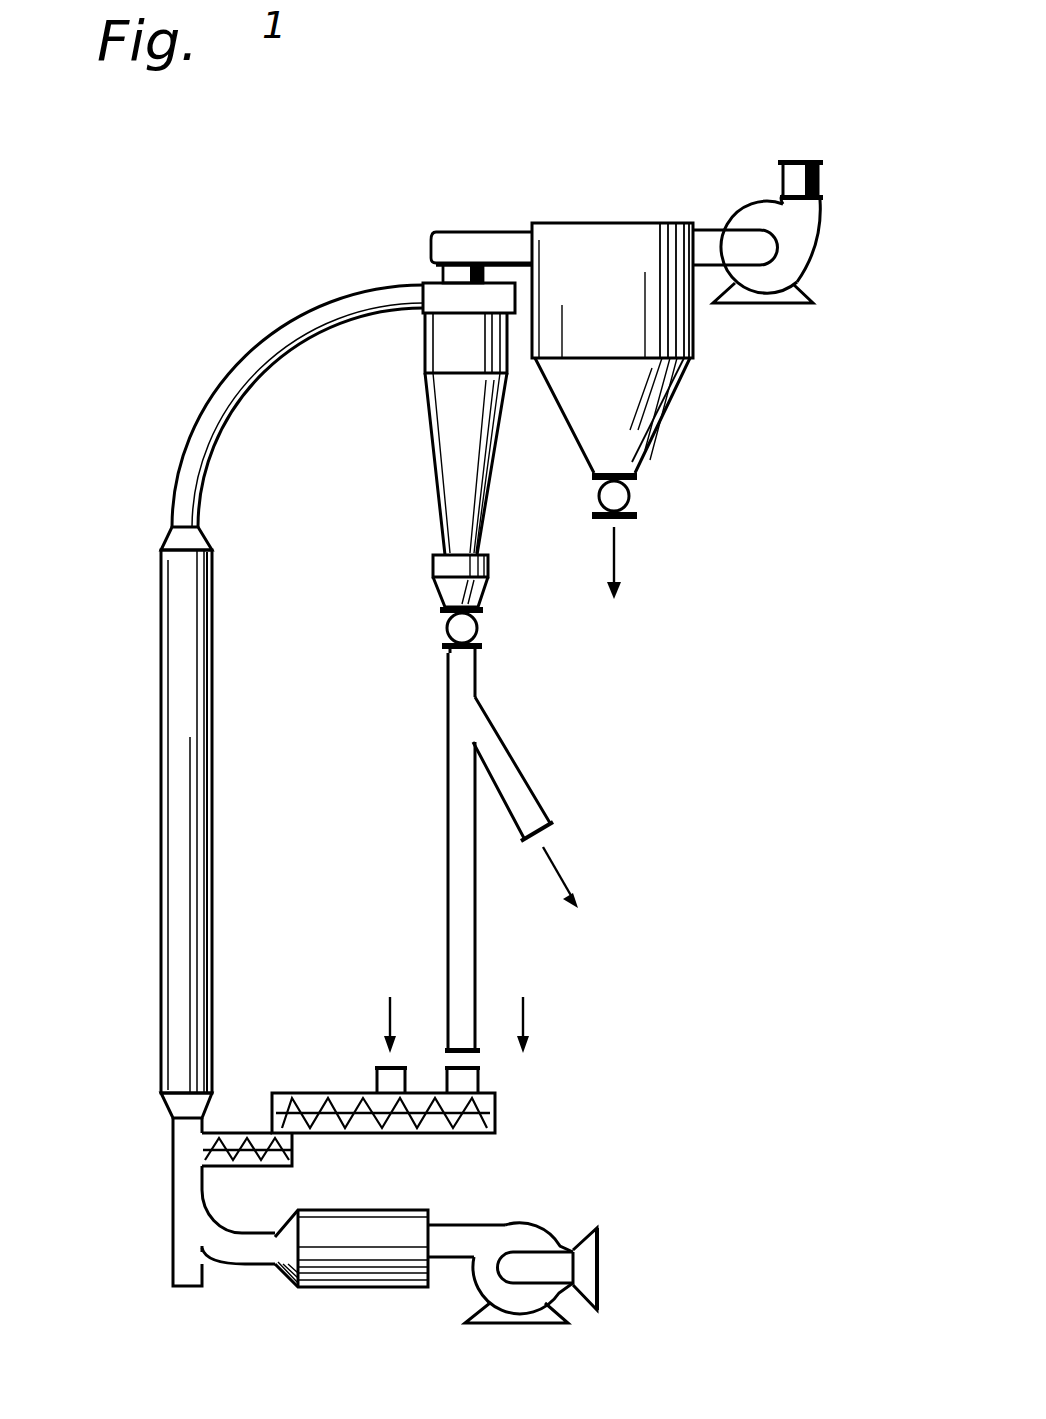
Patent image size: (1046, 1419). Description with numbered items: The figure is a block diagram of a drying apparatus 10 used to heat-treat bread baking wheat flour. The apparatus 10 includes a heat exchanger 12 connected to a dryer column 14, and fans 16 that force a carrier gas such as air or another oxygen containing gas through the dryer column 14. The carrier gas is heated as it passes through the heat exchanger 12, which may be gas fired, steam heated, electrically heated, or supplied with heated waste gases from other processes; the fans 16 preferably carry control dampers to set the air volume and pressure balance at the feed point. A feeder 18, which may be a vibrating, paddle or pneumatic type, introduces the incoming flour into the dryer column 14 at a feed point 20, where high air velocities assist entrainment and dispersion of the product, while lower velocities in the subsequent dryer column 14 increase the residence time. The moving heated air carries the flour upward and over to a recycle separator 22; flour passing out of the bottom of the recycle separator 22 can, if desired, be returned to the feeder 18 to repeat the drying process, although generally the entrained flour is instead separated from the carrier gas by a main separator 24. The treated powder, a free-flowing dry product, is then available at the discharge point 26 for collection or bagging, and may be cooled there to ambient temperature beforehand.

The drying apparatus 10 is at (690, 958).
The heat exchanger 12 is at (357, 1287).
The dryer column 14 is at (180, 687).
The fans 16 is at (517, 1237).
The feeder 18 is at (410, 1133).
The feed point 20 is at (178, 1148).
The recycle separator 22 is at (440, 440).
The main separator 24 is at (693, 337).
The discharge point 26 is at (632, 520).